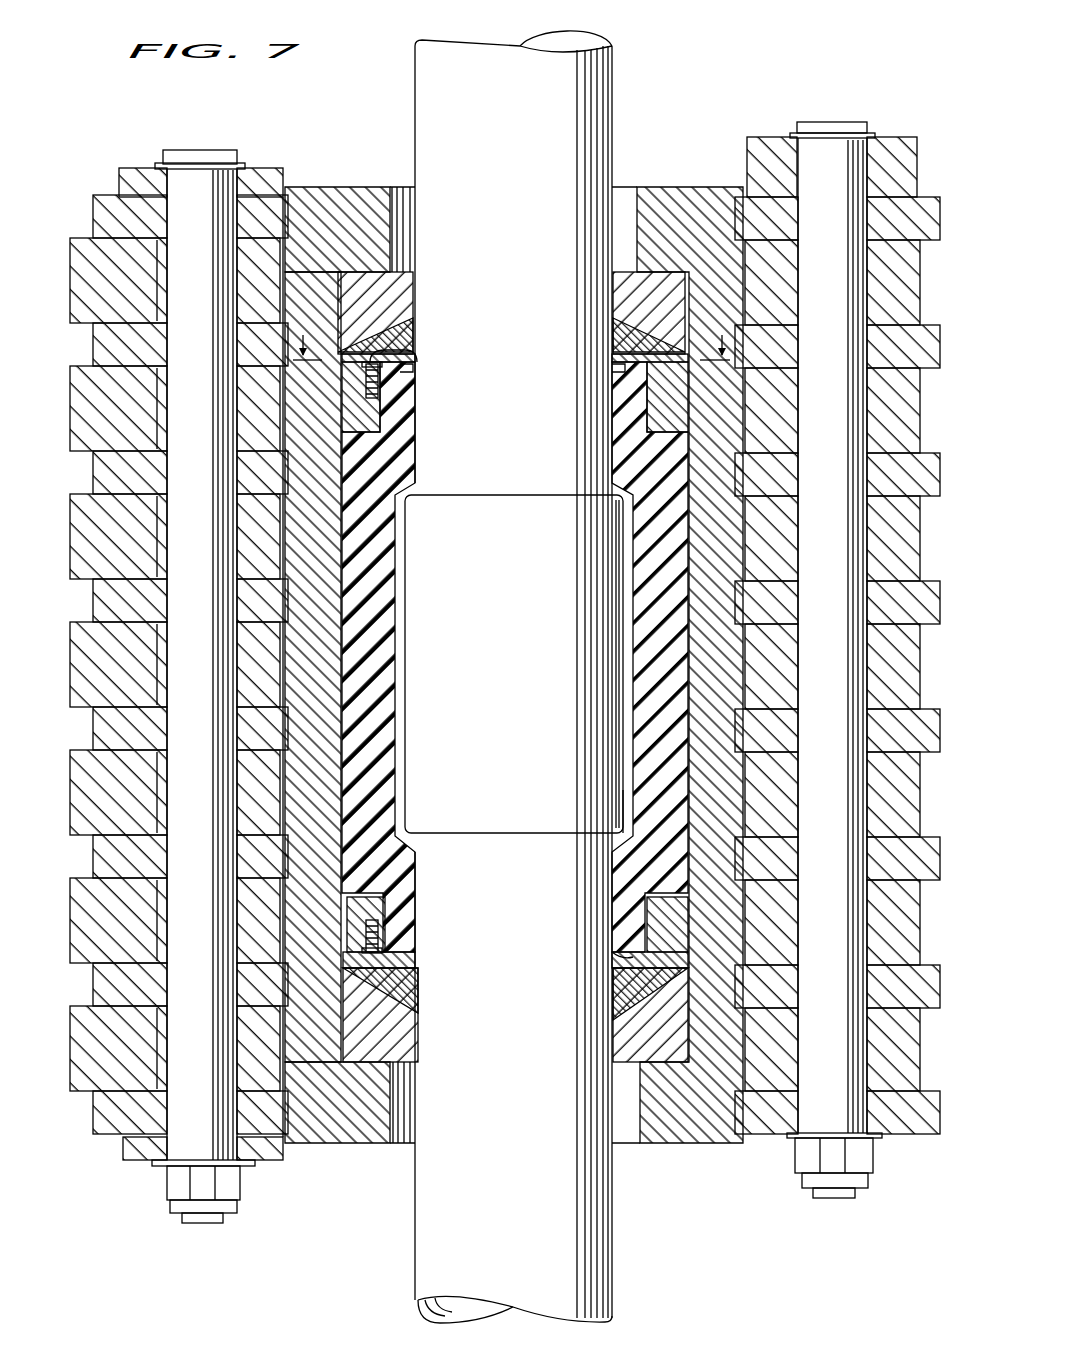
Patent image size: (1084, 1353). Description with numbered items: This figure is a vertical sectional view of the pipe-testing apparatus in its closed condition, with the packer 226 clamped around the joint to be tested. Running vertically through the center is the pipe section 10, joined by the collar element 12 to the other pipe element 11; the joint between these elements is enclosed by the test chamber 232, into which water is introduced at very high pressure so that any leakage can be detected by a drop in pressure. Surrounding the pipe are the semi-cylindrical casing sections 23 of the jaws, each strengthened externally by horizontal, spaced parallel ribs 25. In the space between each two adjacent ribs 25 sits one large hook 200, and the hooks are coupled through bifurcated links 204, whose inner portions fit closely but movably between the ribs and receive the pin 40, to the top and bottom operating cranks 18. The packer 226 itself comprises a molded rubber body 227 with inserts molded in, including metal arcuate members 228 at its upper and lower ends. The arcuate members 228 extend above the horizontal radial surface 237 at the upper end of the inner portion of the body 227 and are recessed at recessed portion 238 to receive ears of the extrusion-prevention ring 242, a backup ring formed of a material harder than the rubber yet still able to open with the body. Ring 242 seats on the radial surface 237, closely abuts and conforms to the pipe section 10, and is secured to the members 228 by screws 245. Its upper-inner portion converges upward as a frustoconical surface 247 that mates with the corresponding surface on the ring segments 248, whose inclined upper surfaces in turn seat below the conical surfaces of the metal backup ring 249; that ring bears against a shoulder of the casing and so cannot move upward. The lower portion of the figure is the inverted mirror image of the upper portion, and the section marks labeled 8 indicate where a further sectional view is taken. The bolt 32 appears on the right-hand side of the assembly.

The section line of FIG. 8 is at (511, 330).
The pipe section 10 is at (612, 97).
The pipe element 11 is at (522, 1159).
The collar element 12 is at (520, 661).
The operating crank 18 is at (122, 178).
The semi-cylindrical casing section 23 is at (342, 190).
The rib 25 is at (136, 231).
The tie bolt 32 is at (820, 124).
The pin 40 is at (175, 148).
The hook 200 is at (133, 293).
The bifurcated link 204 is at (283, 265).
The packer 226 is at (340, 672).
The molded rubber body 227 is at (345, 525).
The arcuate member 228 is at (345, 406).
The test chamber 232 is at (628, 800).
The radial surface 237 is at (412, 376).
The recessed portion 238 is at (365, 380).
The extrusion-prevention ring 242 is at (413, 372).
The screw 245 is at (395, 356).
The frustoconical surface 247 is at (400, 360).
The ring segment 248 is at (413, 325).
The metal backup ring 249 is at (615, 298).